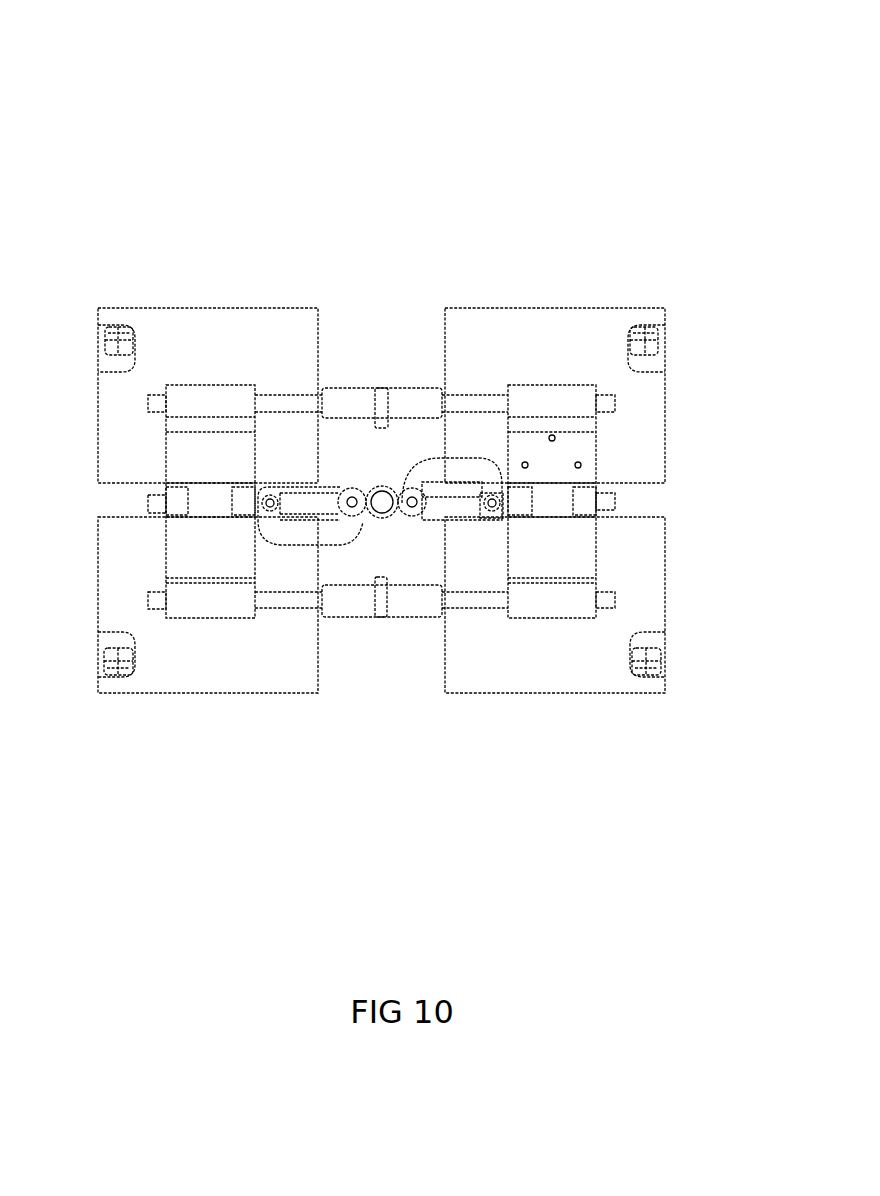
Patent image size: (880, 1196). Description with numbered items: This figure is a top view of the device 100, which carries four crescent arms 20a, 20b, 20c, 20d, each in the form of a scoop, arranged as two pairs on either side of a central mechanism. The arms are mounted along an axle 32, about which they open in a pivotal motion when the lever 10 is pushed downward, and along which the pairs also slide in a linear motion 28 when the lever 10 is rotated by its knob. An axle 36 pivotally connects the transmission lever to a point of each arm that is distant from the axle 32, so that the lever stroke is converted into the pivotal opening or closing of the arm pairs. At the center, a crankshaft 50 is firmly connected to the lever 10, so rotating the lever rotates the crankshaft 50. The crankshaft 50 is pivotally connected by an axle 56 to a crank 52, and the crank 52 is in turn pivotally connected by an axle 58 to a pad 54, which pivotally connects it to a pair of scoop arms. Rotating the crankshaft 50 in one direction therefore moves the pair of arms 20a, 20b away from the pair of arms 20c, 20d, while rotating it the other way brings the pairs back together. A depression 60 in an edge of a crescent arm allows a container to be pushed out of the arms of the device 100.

The device 100 is at (198, 112).
The crescent arm 20a is at (170, 362).
The crescent arm 20b is at (242, 672).
The crescent arm 20c is at (534, 360).
The crescent arm 20d is at (586, 672).
The linear motion 28 is at (332, 340).
The axle 32 is at (148, 503).
The axle 36 is at (296, 406).
The pad 54 is at (194, 472).
The crank 52 is at (475, 470).
The axle 58 is at (268, 494).
The axle 56 is at (350, 496).
The lever 10 is at (384, 486).
The crankshaft 50 is at (408, 516).
The depression 60 is at (680, 362).